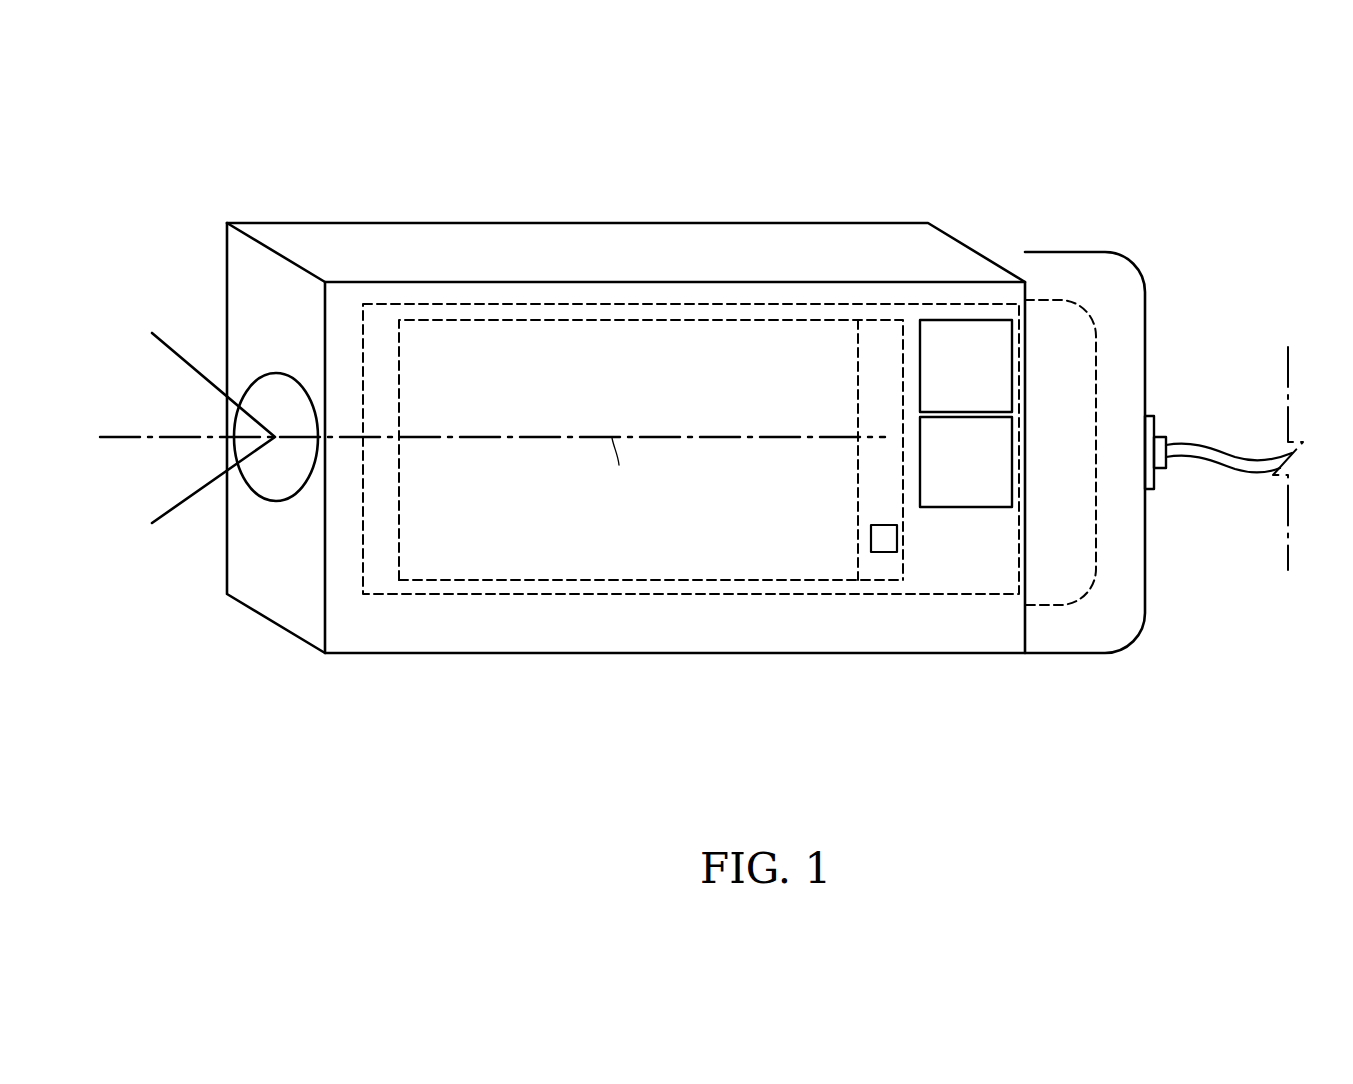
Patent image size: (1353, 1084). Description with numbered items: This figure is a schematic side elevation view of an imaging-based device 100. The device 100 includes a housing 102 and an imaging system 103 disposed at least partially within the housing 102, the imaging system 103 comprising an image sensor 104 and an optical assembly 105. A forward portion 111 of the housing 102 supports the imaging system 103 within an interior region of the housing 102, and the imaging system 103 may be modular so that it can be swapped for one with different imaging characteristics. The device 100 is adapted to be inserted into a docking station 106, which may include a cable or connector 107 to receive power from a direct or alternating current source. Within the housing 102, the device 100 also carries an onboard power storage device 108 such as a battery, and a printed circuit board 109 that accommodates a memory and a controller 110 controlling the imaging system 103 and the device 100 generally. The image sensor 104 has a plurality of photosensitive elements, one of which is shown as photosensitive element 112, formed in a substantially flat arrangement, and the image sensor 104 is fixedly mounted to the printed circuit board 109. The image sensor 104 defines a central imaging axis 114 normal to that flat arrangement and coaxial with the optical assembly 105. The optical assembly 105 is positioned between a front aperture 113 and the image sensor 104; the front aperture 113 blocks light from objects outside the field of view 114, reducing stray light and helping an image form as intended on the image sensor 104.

The imaging-based device 100 is at (214, 147).
The housing 102 is at (952, 233).
The imaging system 103 is at (652, 580).
The image sensor 104 is at (882, 342).
The optical assembly 105 is at (745, 320).
The docking station 106 is at (1132, 265).
The cable or connector 107 is at (1248, 460).
The power storage device 108 is at (990, 380).
The printed circuit board 109 is at (668, 304).
The controller 110 is at (990, 480).
The forward portion 111 is at (559, 196).
The photosensitive element 112 is at (883, 552).
The front aperture 113 is at (283, 388).
The central imaging axis / field of view 114 is at (173, 512).